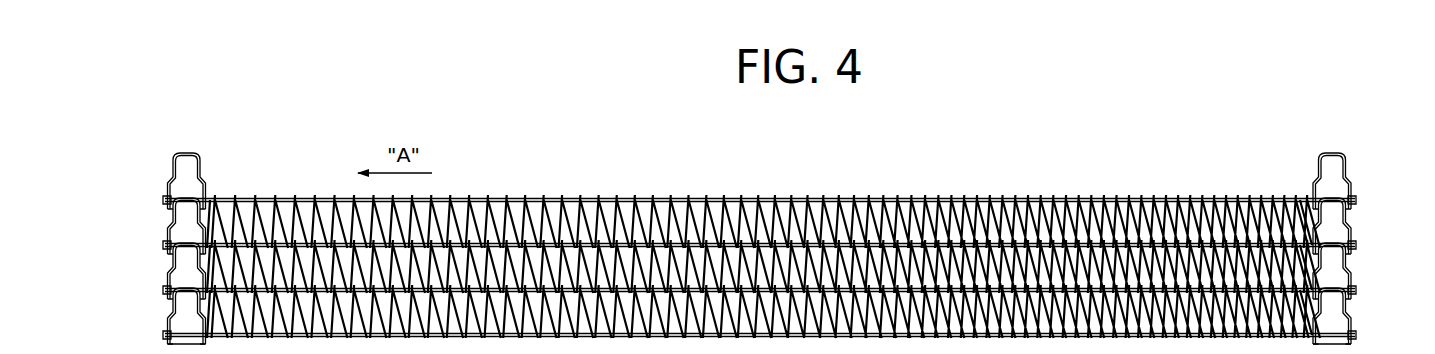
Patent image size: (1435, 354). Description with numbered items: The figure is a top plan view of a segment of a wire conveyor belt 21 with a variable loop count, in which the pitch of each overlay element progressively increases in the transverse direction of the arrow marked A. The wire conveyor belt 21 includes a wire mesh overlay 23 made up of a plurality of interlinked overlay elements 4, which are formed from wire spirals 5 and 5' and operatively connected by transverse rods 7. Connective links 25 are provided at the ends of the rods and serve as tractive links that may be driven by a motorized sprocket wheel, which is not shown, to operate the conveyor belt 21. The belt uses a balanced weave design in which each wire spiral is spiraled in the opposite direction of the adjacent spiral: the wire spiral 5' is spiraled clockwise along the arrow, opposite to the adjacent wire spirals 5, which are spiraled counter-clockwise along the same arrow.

The wire conveyor belt 21 is at (588, 164).
The wire mesh overlay 23 is at (767, 184).
The transverse rods 7 is at (264, 243).
The overlay elements 4 is at (205, 224).
The connective links 25 is at (163, 219).
The wire spirals 5 is at (1355, 261).
The wire spiral 5' is at (1342, 267).